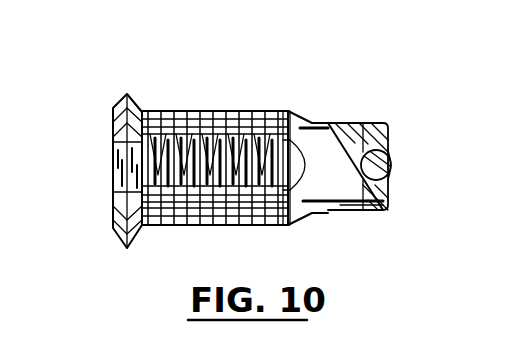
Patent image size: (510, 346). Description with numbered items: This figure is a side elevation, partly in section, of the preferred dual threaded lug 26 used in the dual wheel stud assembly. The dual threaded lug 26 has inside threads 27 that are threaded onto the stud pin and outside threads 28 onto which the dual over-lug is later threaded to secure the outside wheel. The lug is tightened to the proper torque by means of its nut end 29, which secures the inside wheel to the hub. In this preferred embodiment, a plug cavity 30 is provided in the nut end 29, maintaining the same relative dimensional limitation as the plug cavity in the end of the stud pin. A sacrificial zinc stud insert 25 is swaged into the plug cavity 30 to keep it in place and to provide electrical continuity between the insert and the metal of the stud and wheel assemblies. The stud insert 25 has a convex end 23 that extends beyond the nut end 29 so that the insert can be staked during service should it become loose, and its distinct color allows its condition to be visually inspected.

The convex end 23 is at (393, 163).
The stud insert 25 is at (388, 174).
The dual threaded lug 26 is at (123, 92).
The inside threads 27 is at (180, 133).
The outside threads 28 is at (216, 120).
The nut end 29 is at (383, 209).
The plug cavity 30 is at (358, 148).